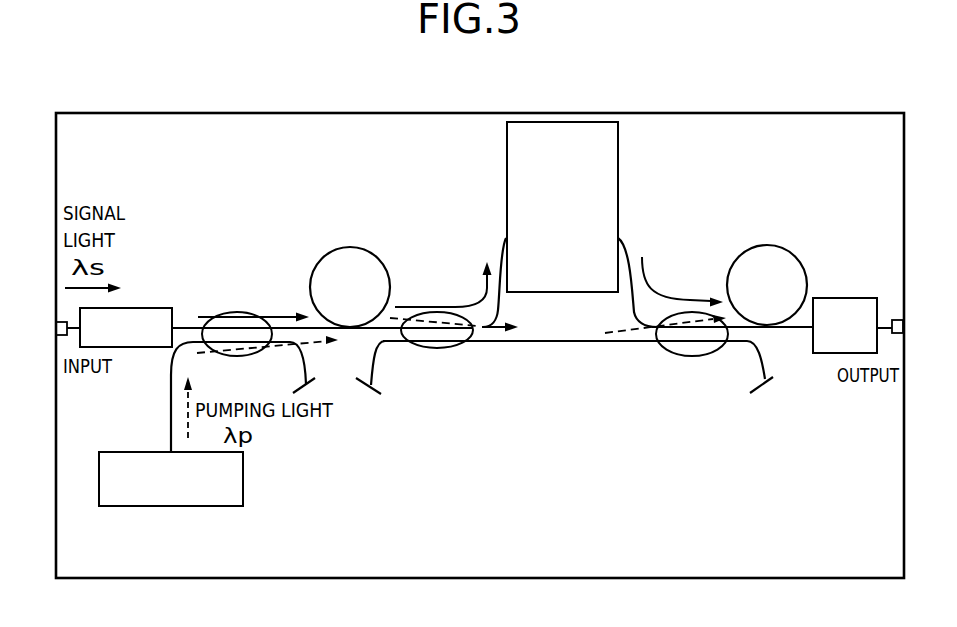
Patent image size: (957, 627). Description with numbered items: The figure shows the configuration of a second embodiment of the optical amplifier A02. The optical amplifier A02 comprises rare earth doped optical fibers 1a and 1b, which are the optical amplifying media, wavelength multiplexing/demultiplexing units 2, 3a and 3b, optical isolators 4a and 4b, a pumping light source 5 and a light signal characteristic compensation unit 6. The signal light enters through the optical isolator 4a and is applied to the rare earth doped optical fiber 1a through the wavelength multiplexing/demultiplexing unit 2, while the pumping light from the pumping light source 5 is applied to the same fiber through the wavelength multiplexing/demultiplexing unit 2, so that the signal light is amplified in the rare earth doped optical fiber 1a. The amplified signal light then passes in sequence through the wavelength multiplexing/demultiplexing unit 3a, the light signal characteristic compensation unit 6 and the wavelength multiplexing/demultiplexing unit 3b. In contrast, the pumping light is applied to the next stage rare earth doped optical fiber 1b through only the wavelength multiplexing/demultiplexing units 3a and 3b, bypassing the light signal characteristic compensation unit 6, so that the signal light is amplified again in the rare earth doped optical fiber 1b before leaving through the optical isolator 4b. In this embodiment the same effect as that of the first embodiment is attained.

The optical amplifier A02 is at (687, 113).
The rare earth doped optical fiber 1a is at (345, 246).
The rare earth doped optical fiber 1b is at (767, 245).
The wavelength multiplexing/demultiplexing unit 2 is at (232, 312).
The wavelength multiplexing/demultiplexing unit 3a is at (435, 358).
The wavelength multiplexing/demultiplexing unit 3b is at (690, 357).
The optical isolator 4a is at (133, 308).
The optical isolator 4b is at (838, 298).
The pumping light source 5 is at (243, 473).
The light signal characteristic compensation unit 6 is at (618, 167).